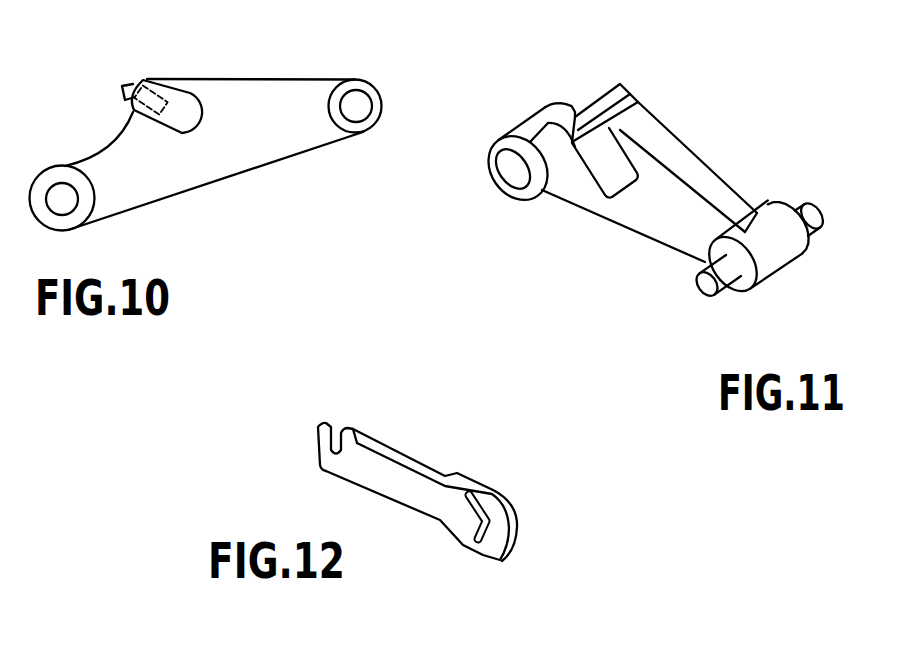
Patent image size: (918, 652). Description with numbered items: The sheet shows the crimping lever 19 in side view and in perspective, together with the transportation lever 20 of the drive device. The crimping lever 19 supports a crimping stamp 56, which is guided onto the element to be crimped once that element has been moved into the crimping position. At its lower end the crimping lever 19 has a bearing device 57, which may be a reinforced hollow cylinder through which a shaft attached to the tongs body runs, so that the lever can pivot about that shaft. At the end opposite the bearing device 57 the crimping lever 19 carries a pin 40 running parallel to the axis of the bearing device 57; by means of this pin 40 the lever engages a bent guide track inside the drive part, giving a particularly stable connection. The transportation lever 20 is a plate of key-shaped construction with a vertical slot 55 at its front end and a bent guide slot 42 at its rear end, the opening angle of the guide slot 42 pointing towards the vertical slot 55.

In FIG. 10, the crimping lever 19 is at (218, 88).
In FIG. 11, the crimping lever 19 is at (653, 227).
In FIG. 12, the transportation lever 20 is at (405, 458).
In FIG. 10, the pin 40 is at (358, 103).
In FIG. 11, the pin 40 is at (707, 287).
In FIG. 12, the bent guide slot 42 is at (485, 537).
In FIG. 12, the vertical slot 55 is at (330, 430).
In FIG. 10, the crimping stamp 56 is at (141, 80).
In FIG. 11, the crimping stamp 56 is at (623, 88).
In FIG. 10, the bearing device 57 is at (50, 175).
In FIG. 11, the bearing device 57 is at (490, 160).